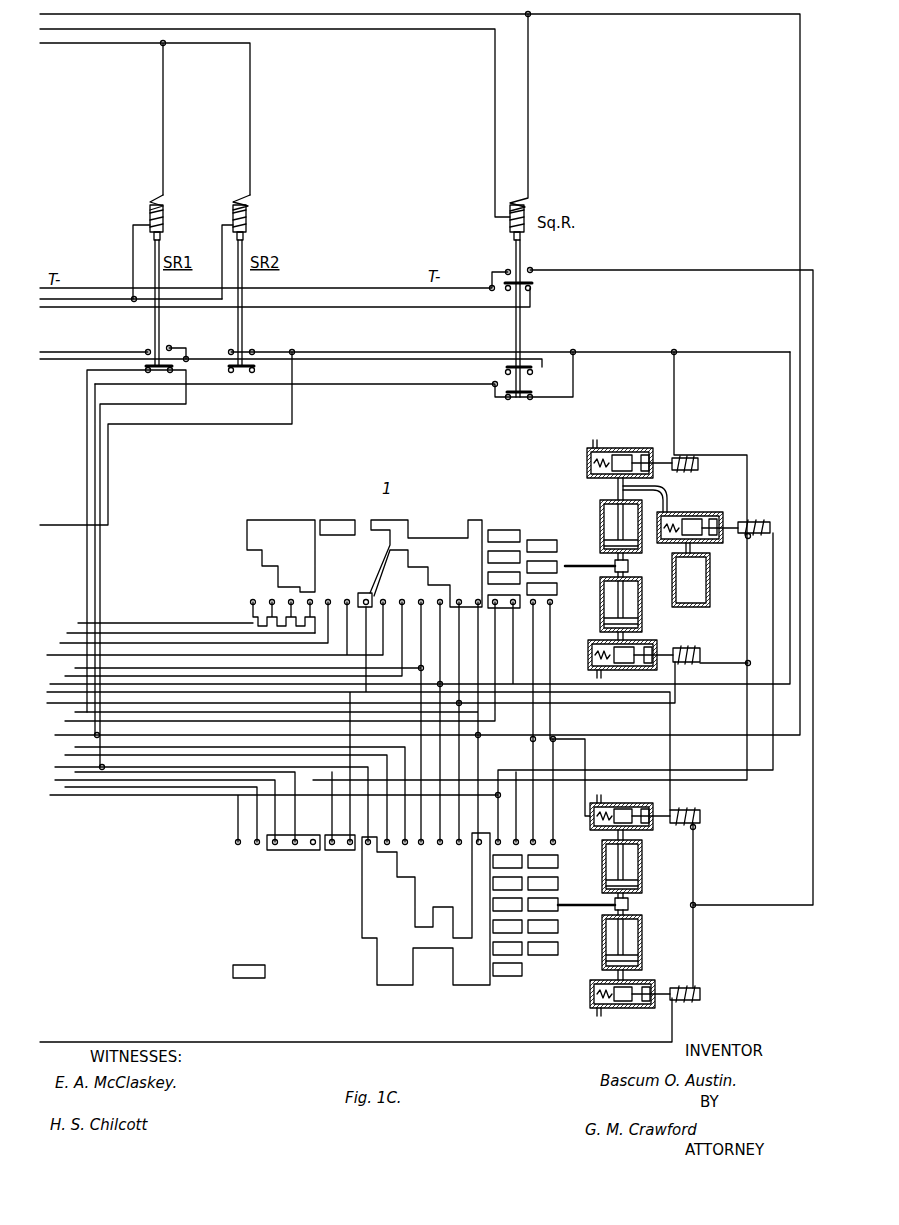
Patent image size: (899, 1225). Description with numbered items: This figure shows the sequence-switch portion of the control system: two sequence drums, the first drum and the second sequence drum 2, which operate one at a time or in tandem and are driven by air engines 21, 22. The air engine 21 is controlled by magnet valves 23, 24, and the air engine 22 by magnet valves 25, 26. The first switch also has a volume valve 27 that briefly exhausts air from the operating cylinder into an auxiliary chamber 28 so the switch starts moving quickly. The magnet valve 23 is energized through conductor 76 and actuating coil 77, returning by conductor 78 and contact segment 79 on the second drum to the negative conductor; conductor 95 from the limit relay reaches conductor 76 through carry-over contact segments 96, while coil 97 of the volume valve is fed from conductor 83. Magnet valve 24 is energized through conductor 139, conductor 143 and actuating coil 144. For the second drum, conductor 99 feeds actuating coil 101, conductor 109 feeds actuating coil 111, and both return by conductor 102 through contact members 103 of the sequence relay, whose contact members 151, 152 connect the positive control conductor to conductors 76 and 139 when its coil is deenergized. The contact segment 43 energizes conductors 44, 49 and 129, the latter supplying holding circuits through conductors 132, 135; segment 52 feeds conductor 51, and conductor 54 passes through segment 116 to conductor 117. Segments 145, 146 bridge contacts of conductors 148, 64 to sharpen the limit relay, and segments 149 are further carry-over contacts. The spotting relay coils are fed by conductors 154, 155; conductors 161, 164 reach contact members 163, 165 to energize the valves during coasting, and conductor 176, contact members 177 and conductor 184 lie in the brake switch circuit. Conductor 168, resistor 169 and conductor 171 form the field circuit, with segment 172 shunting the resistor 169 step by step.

The sequence drum 2 is at (459, 806).
The air engine 21 is at (611, 559).
The air engine 22 is at (567, 908).
The magnet valve 23 is at (628, 442).
The magnet valve 24 is at (646, 642).
The magnet valve 25 is at (640, 800).
The magnet valve 26 is at (636, 1010).
The volume valve 27 is at (700, 512).
The auxiliary chamber 28 is at (710, 572).
The contact segment 43 is at (457, 530).
The conductor 44 is at (155, 703).
The conductor 49 is at (366, 648).
The conductor 51 is at (100, 580).
The contact segment 52 is at (343, 852).
The conductor 54 is at (193, 785).
The conductor 64 is at (420, 369).
The conductor 76 is at (418, 558).
The actuating coil 77 is at (686, 457).
The conductor 78 is at (748, 503).
The contact segment 79 is at (305, 852).
The conductor 83 is at (70, 805).
The conductor 95 is at (145, 733).
The contact segments 96 is at (520, 530).
The actuating coil 97 is at (752, 538).
The conductor 99 is at (118, 703).
The actuating coil 101 is at (686, 810).
The conductor 102 is at (671, 581).
The contact members 103 is at (535, 275).
The conductor 109 is at (356, 1020).
The actuating coil 111 is at (676, 1000).
The contact segment 116 is at (238, 990).
The conductor 117 is at (182, 800).
The conductor 129 is at (388, 660).
The conductor 132 is at (128, 758).
The conductor 135 is at (112, 748).
The conductor 139 is at (46, 360).
The conductor 143 is at (195, 703).
The actuating coil 144 is at (678, 662).
The contact segments 145 is at (545, 531).
The contact segments 146 is at (540, 957).
The conductor 148 is at (553, 608).
The contact segments 149 is at (508, 977).
The contact member 151 is at (505, 368).
The contact member 152 is at (518, 398).
The conductor 154 is at (102, 44).
The conductor 155 is at (78, 296).
The conductor 161 is at (80, 358).
The contact member 163 is at (252, 367).
The conductor 164 is at (95, 343).
The contact member 165 is at (148, 352).
The conductor 168 is at (147, 622).
The resistor 169 is at (267, 610).
The conductor 171 is at (191, 629).
The contact segment 172 is at (247, 546).
The conductor 176 is at (87, 578).
The contact members 177 is at (166, 559).
The conductor 184 is at (167, 775).